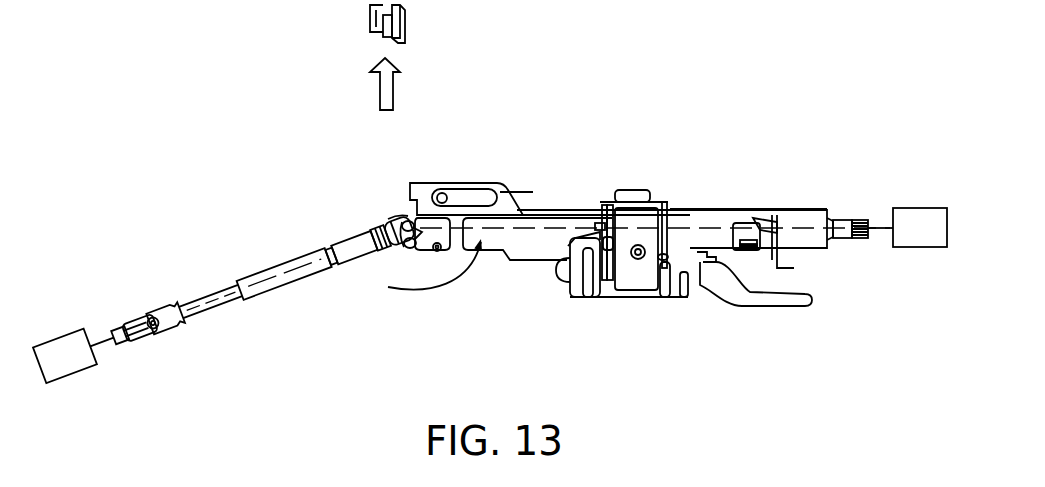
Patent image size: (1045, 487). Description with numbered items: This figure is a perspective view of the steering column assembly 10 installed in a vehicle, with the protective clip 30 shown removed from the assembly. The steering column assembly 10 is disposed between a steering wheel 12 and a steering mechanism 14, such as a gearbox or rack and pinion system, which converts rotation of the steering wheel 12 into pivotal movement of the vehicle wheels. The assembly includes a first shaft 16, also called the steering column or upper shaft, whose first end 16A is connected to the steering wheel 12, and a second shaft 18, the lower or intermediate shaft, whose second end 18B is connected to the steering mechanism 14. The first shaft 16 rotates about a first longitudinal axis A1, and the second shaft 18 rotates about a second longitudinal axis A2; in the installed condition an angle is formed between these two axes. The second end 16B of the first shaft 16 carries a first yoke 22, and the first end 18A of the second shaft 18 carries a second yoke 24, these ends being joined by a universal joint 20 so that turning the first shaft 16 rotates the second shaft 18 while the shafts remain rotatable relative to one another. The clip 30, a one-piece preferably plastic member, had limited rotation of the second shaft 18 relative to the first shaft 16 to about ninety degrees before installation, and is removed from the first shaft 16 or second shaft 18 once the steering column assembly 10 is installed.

The steering column assembly 10 is at (501, 209).
The steering wheel 12 is at (919, 248).
The steering mechanism 14 is at (70, 374).
The first shaft 16 is at (672, 223).
The first end 16A is at (842, 240).
The second end 16B is at (423, 234).
The second shaft 18 is at (262, 282).
The first end 18A is at (393, 233).
The second end 18B is at (147, 325).
The universal joint 20 is at (446, 136).
The first yoke 22 is at (414, 273).
The second yoke 24 is at (367, 190).
The protective clip 30 is at (426, 24).
The first longitudinal axis A1 is at (707, 222).
The second longitudinal axis A2 is at (263, 278).